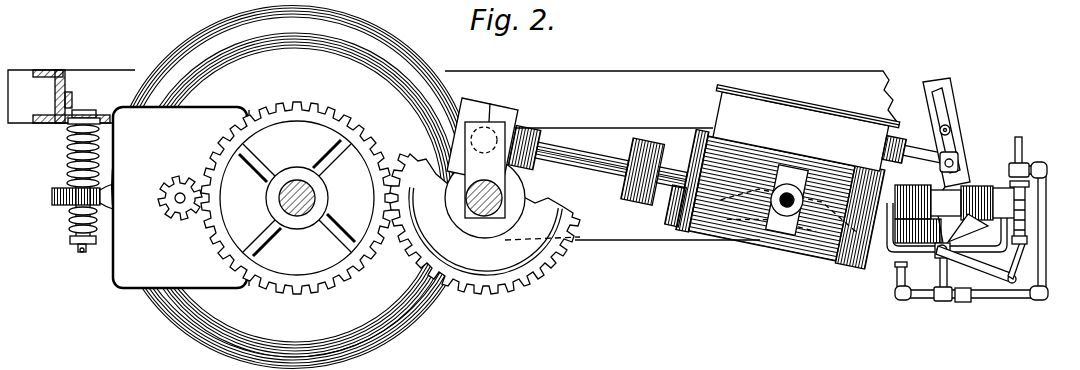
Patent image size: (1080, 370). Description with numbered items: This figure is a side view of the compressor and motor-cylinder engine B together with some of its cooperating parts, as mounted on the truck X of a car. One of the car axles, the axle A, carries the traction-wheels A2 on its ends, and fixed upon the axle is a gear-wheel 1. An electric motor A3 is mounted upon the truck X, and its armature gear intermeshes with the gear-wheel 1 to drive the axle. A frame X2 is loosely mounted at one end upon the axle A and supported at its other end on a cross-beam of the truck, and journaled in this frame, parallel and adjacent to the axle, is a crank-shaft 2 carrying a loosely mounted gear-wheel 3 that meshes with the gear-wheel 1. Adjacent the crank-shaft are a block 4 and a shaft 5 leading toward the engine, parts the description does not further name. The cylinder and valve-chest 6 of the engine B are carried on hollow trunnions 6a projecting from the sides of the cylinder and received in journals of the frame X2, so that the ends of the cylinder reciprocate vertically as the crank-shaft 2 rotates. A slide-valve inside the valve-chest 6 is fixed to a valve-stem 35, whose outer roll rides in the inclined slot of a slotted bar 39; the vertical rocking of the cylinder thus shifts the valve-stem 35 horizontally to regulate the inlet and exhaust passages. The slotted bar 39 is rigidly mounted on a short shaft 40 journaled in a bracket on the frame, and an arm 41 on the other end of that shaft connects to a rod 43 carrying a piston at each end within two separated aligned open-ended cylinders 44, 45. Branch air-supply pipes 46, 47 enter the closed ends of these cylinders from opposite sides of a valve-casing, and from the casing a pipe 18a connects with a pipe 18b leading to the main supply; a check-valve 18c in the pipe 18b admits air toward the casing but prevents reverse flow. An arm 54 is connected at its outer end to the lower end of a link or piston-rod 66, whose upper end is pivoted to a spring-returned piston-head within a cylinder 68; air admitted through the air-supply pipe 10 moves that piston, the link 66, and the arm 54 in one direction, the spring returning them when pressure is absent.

The gear-wheel 1 is at (340, 276).
The crank-shaft 2 is at (478, 216).
The gear-wheel 3 is at (532, 277).
The slide block 4 is at (482, 158).
The shaft 5 is at (602, 146).
The valve-chest 6 is at (809, 180).
The trunnions 6a is at (787, 199).
The air-supply pipe 10 is at (1021, 150).
The valve-stem 35 is at (902, 140).
The slotted bar 39 is at (957, 103).
The short shaft 40 is at (952, 131).
The arm 41 is at (958, 173).
The rod 43 is at (947, 205).
The cylinder 44 is at (913, 192).
The cylinder 45 is at (1022, 193).
The branch air-supply pipe 46 is at (893, 253).
The branch air-supply pipe 47 is at (1022, 228).
The arm 54 is at (1002, 284).
The link or piston-rod 66 is at (1020, 259).
The cylinder 68 is at (1023, 207).
The pipe 18a is at (942, 283).
The pipe 18b is at (1023, 303).
The check-valve 18c is at (963, 305).
The axle A is at (318, 198).
The traction-wheels A2 is at (293, 187).
The electric motor A3 is at (181, 197).
The engine B is at (768, 238).
The truck X is at (182, 170).
The frame X2 is at (452, 155).